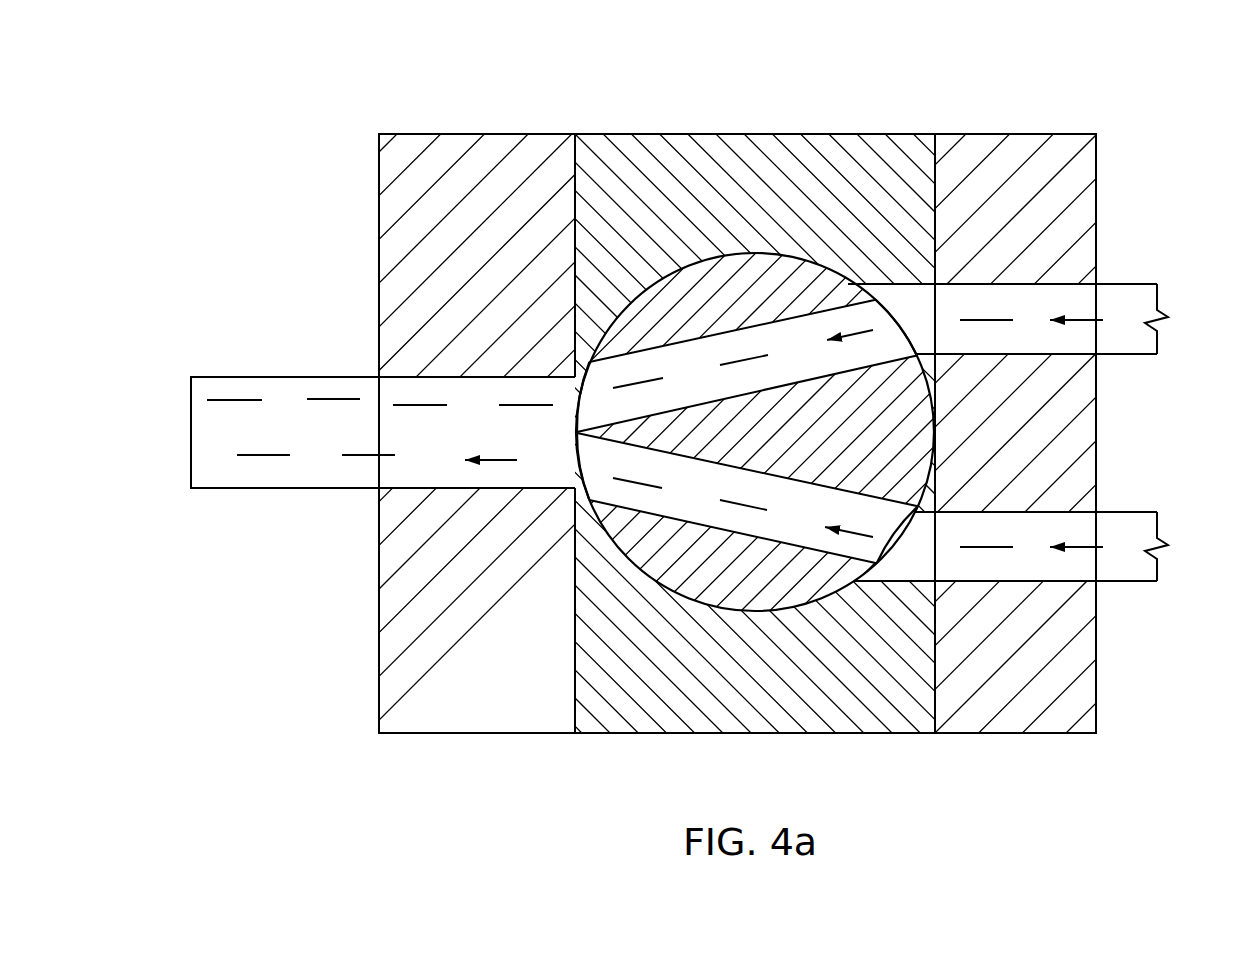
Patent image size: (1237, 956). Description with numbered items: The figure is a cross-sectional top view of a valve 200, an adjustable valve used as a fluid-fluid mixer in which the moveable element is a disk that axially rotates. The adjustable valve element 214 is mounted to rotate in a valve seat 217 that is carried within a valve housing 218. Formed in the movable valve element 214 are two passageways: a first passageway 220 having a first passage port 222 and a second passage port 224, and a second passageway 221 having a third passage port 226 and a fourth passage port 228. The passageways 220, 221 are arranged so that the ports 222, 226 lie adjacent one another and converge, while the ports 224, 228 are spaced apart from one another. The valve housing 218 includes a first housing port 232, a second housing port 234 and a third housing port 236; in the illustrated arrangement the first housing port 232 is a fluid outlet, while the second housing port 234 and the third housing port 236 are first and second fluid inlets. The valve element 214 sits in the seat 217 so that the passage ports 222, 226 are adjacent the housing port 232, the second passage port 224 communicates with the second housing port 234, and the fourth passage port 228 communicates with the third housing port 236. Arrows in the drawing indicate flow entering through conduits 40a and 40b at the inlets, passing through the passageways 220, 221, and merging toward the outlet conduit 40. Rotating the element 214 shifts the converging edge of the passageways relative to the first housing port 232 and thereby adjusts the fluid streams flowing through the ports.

The valve 200 is at (1088, 70).
The valve housing 218 is at (455, 133).
The valve seat 217 is at (789, 134).
The adjustable valve element 214 is at (720, 268).
The first passageway 220 is at (783, 338).
The second passageway 221 is at (693, 497).
The first passage port 222 is at (580, 382).
The second passage port 224 is at (883, 322).
The third passage port 226 is at (568, 467).
The fourth passage port 228 is at (934, 455).
The first housing port 232 is at (568, 397).
The second housing port 234 is at (947, 310).
The third housing port 236 is at (947, 555).
The outlet conduit 40 is at (282, 390).
The first inlet conduit 40a is at (1115, 302).
The second inlet conduit 40b is at (1122, 528).